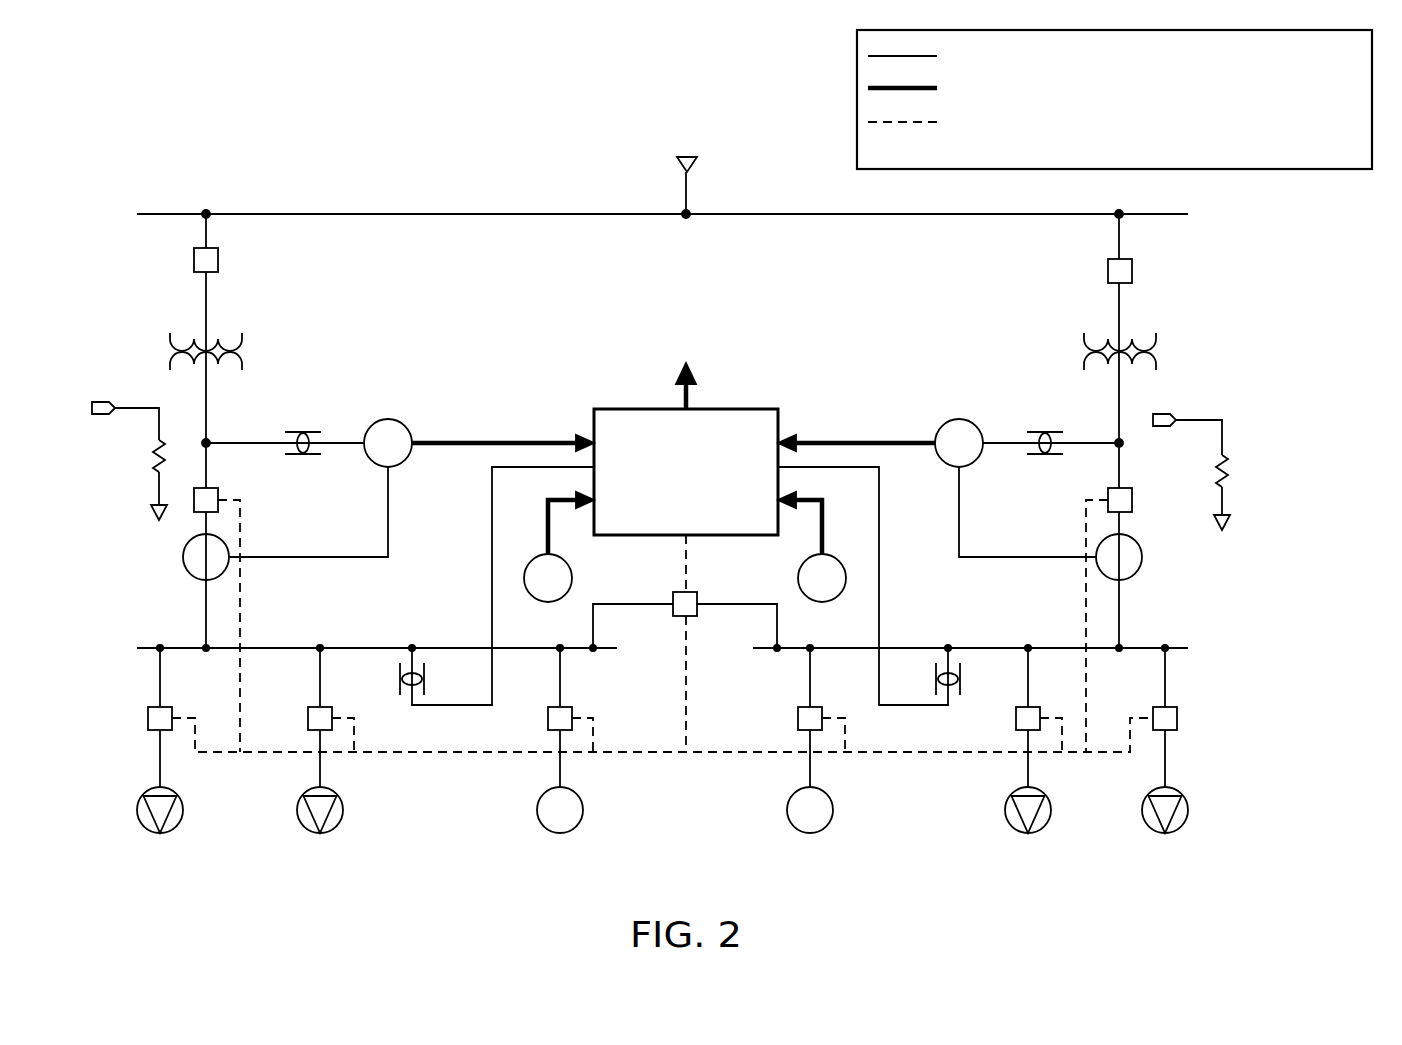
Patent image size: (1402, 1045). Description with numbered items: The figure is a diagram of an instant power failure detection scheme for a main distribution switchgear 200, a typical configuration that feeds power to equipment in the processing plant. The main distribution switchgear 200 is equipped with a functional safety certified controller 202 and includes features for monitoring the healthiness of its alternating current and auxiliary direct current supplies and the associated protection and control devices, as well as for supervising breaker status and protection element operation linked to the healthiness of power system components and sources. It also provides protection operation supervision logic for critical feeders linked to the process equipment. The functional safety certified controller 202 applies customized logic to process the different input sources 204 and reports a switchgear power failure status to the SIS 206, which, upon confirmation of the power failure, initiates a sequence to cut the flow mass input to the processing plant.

The main distribution switchgear 200 is at (336, 107).
The functional safety certified controller 202 is at (753, 409).
The input sources 204 is at (1243, 420).
The SIS 206 is at (637, 333).